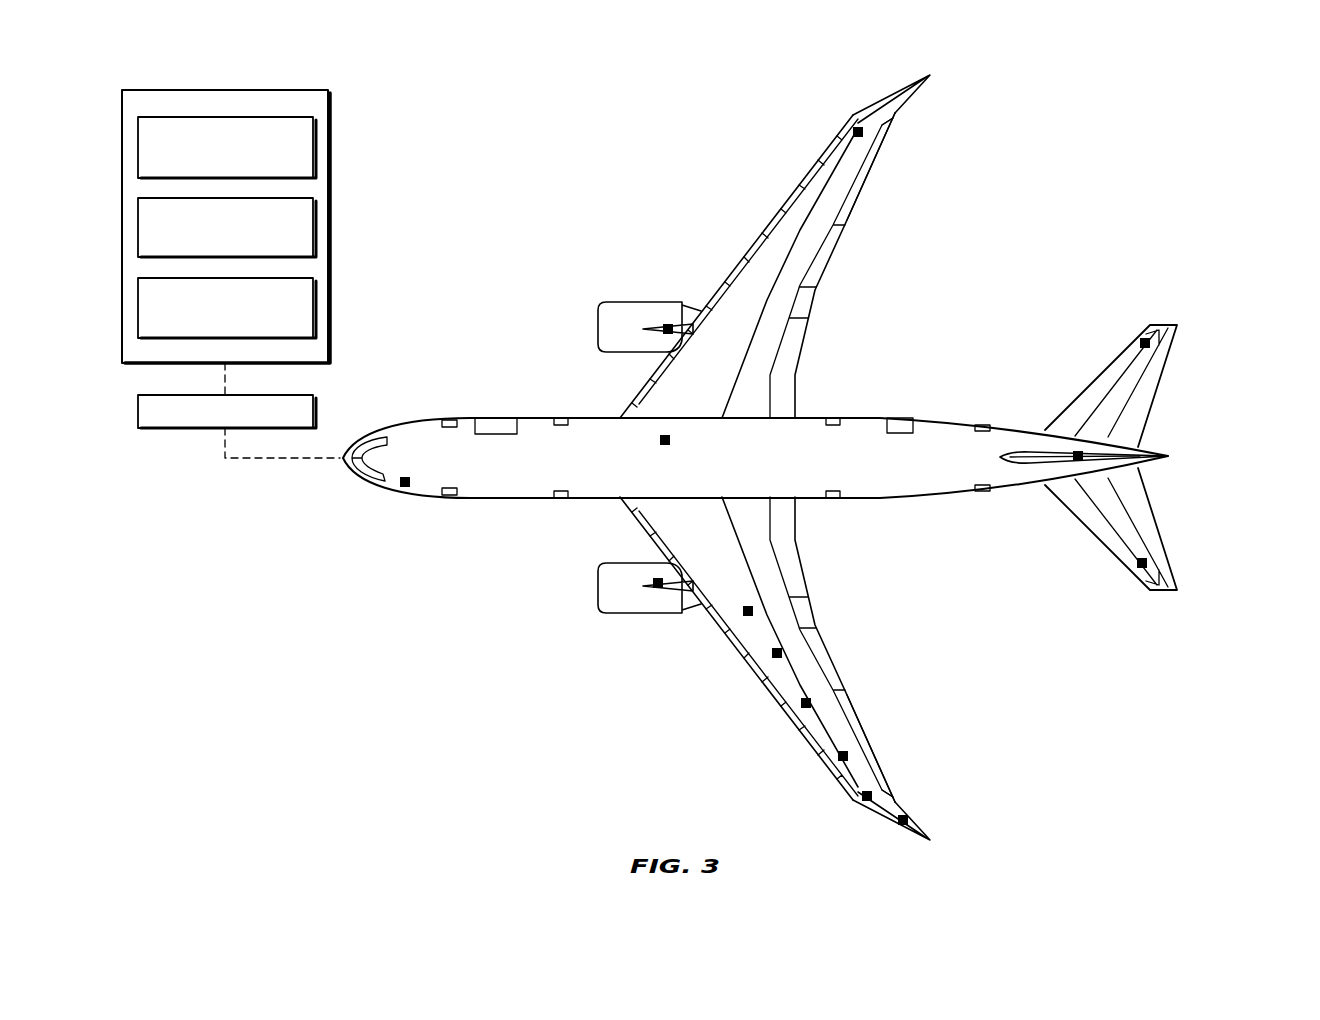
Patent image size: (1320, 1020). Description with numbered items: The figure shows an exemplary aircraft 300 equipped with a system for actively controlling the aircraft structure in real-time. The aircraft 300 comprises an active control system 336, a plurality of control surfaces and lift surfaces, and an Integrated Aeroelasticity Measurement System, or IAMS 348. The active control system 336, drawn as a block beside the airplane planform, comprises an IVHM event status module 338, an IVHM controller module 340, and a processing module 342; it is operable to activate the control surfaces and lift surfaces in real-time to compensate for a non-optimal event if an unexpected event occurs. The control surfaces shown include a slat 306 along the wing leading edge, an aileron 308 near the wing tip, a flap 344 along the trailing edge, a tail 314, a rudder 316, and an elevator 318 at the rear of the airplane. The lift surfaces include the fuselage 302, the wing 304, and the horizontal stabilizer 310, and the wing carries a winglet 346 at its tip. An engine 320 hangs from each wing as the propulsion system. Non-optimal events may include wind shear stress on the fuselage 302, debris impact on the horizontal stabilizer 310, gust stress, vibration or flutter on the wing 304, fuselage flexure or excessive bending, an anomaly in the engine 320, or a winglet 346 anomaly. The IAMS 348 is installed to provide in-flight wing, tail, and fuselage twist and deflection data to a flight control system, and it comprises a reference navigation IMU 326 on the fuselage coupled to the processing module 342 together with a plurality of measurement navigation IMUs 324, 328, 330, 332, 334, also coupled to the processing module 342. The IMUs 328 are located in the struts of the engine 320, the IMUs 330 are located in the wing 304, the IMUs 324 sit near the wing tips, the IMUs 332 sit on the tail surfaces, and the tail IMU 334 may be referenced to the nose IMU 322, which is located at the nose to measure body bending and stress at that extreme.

The aircraft 300 is at (583, 151).
The fuselage 302 is at (527, 460).
The wing 304 is at (784, 238).
The slat 306 is at (806, 170).
The aileron 308 is at (870, 168).
The horizontal stabilizer 310 is at (1100, 370).
The tail 314 is at (1022, 465).
The rudder 316 is at (1140, 455).
The elevator 318 is at (1145, 400).
The engine 320 is at (612, 316).
The IMU 322 is at (404, 487).
The measurement navigation IMU 324 is at (852, 126).
The reference navigation IMU 326 is at (663, 434).
The IMU 328 is at (666, 322).
The IMU 330 is at (742, 612).
The measurement navigation IMU 332 is at (1140, 340).
The tail IMU 334 is at (1078, 450).
The active control system 336 is at (296, 88).
The IVHM event status module 338 is at (316, 133).
The IVHM controller module 340 is at (316, 214).
The processing module 342 is at (316, 295).
The flap 344 is at (826, 253).
The winglet 346 is at (921, 90).
The Integrated Aeroelasticity Measurement System (IAMS) 348 is at (316, 410).